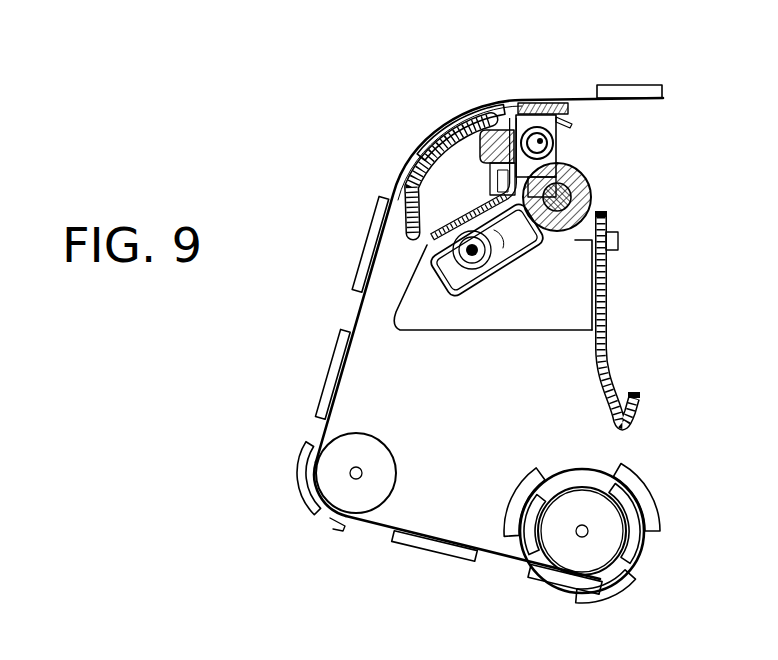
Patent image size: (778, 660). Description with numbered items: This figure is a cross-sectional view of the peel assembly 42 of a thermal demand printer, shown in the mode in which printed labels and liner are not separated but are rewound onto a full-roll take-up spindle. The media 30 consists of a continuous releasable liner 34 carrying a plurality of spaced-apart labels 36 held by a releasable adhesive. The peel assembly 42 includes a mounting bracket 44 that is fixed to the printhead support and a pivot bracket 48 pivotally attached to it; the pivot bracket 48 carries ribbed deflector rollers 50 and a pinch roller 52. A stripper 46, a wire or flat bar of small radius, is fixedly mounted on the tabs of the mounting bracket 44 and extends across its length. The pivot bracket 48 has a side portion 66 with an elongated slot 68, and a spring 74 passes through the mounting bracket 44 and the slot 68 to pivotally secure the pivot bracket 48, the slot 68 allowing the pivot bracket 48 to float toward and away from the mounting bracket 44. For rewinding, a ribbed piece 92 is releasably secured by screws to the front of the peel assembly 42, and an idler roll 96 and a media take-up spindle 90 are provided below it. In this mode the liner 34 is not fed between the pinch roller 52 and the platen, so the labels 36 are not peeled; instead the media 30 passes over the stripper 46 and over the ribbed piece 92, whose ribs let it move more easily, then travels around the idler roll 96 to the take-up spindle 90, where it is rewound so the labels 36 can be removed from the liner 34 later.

The media 30 is at (356, 311).
The releasable liner 34 is at (580, 100).
The labels 36 is at (640, 85).
The peel assembly 42 is at (296, 189).
The mounting bracket 44 is at (449, 326).
The stripper 46 is at (520, 103).
The pivot bracket 48 is at (420, 244).
The ribbed deflector rollers 50 is at (555, 141).
The pinch roller 52 is at (600, 190).
The side portion 66 is at (505, 228).
The elongated slot 68 is at (505, 249).
The spring 74 is at (478, 258).
The media take-up spindle 90 is at (597, 508).
The ribbed piece 92 is at (405, 165).
The idler roll 96 is at (384, 468).